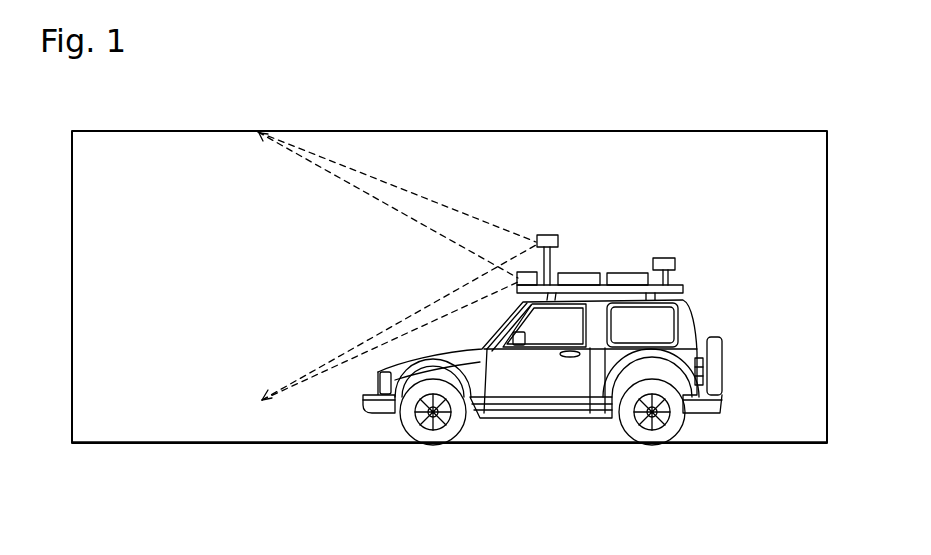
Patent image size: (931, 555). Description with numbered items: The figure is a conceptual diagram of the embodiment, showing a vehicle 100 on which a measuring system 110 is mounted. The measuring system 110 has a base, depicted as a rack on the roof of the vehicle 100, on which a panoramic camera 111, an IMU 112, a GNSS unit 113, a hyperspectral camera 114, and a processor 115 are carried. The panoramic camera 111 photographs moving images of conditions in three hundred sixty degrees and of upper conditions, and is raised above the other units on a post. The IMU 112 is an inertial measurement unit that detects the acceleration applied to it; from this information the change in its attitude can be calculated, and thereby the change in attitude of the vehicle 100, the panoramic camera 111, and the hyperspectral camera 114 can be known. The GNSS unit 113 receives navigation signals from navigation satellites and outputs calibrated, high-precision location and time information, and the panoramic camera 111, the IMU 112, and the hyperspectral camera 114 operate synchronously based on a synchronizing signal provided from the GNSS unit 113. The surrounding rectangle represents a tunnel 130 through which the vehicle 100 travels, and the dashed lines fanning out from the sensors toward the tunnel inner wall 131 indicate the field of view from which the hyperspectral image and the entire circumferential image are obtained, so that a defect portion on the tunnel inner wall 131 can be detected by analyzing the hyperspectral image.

The vehicle 100 is at (702, 317).
The measuring system 110 is at (688, 288).
The panoramic camera 111 is at (541, 235).
The IMU 112 is at (572, 273).
The GNSS unit 113 is at (658, 258).
The hyperspectral camera 114 is at (516, 280).
The processor 115 is at (617, 273).
The tunnel 130 is at (201, 424).
The tunnel inner wall 131 is at (216, 196).